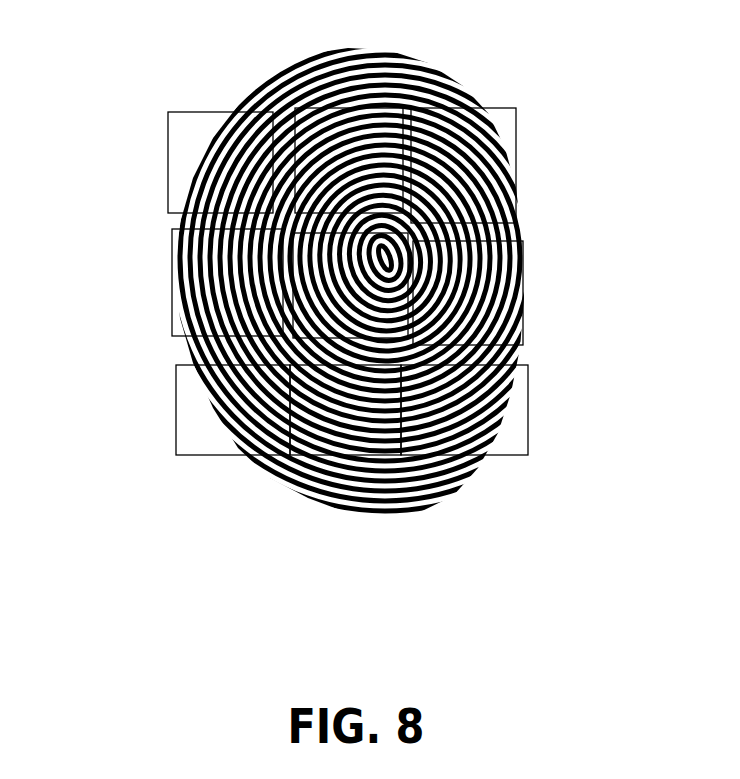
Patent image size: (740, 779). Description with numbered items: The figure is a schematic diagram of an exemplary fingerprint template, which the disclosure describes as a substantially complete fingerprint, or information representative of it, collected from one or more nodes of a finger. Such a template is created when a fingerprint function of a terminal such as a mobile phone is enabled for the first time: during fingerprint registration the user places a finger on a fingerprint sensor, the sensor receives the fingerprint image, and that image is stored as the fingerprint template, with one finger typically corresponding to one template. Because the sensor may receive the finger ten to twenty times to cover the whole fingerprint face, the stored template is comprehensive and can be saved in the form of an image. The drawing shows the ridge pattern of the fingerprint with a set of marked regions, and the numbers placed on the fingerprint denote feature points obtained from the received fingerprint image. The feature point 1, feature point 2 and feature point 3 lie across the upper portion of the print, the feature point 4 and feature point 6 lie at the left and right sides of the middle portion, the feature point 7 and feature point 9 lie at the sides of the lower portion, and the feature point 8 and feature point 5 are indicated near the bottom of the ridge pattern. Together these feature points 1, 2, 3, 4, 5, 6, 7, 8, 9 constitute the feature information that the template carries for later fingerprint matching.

The feature point 1 is at (160, 167).
The feature point 2 is at (372, 100).
The feature point 3 is at (508, 156).
The feature point 4 is at (164, 290).
The feature point 5 is at (384, 415).
The feature point 6 is at (515, 290).
The feature point 7 is at (168, 408).
The feature point 8 is at (345, 436).
The feature point 9 is at (520, 412).